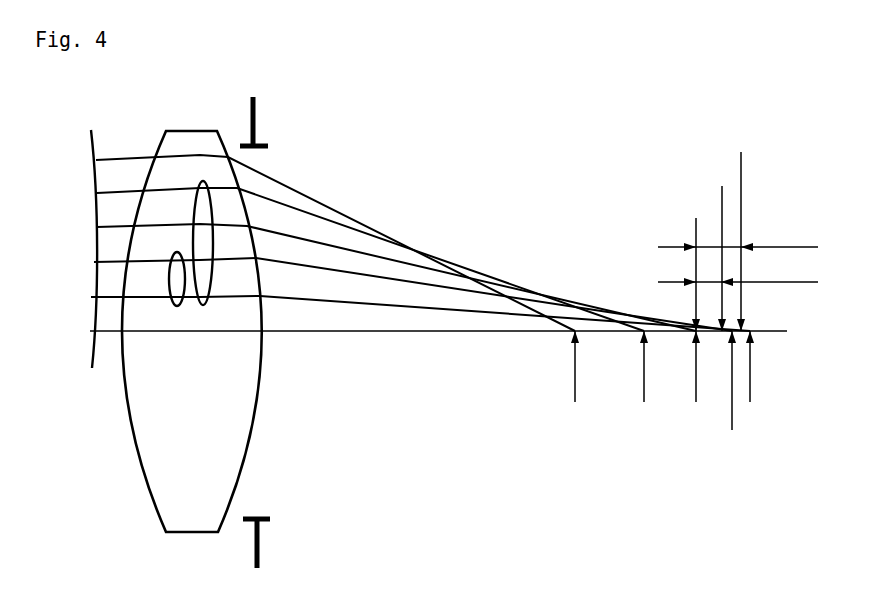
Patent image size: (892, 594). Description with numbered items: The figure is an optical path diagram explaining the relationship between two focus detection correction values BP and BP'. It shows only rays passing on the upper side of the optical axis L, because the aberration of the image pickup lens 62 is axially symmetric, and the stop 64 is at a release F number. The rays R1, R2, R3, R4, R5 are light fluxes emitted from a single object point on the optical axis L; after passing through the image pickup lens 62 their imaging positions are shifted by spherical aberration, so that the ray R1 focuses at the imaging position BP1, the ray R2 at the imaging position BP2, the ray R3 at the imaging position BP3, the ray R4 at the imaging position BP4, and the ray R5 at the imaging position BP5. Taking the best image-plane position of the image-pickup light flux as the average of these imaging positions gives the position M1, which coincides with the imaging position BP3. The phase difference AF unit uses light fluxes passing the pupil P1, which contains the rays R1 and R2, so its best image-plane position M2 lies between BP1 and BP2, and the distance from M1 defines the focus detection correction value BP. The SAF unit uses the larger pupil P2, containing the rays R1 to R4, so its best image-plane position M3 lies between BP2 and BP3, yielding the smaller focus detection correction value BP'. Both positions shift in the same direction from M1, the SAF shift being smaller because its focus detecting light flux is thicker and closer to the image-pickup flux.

The image pickup lens 62 is at (177, 140).
The stop 64 is at (252, 132).
The optical axis L is at (417, 335).
The pupil P1 is at (169, 282).
The pupil P2 is at (193, 244).
The ray R1 is at (470, 312).
The ray R2 is at (430, 285).
The ray R3 is at (380, 253).
The ray R4 is at (343, 222).
The ray R5 is at (302, 193).
The best image-plane position M1 is at (695, 262).
The best image-plane position M2 is at (742, 229).
The best image-plane position M3 is at (714, 246).
The focus detection correction value BP is at (738, 236).
The focus detection correction value BP' is at (738, 272).
The imaging position BP1 is at (767, 381).
The imaging position BP2 is at (730, 396).
The imaging position BP3 is at (699, 381).
The imaging position BP4 is at (640, 381).
The imaging position BP5 is at (572, 381).